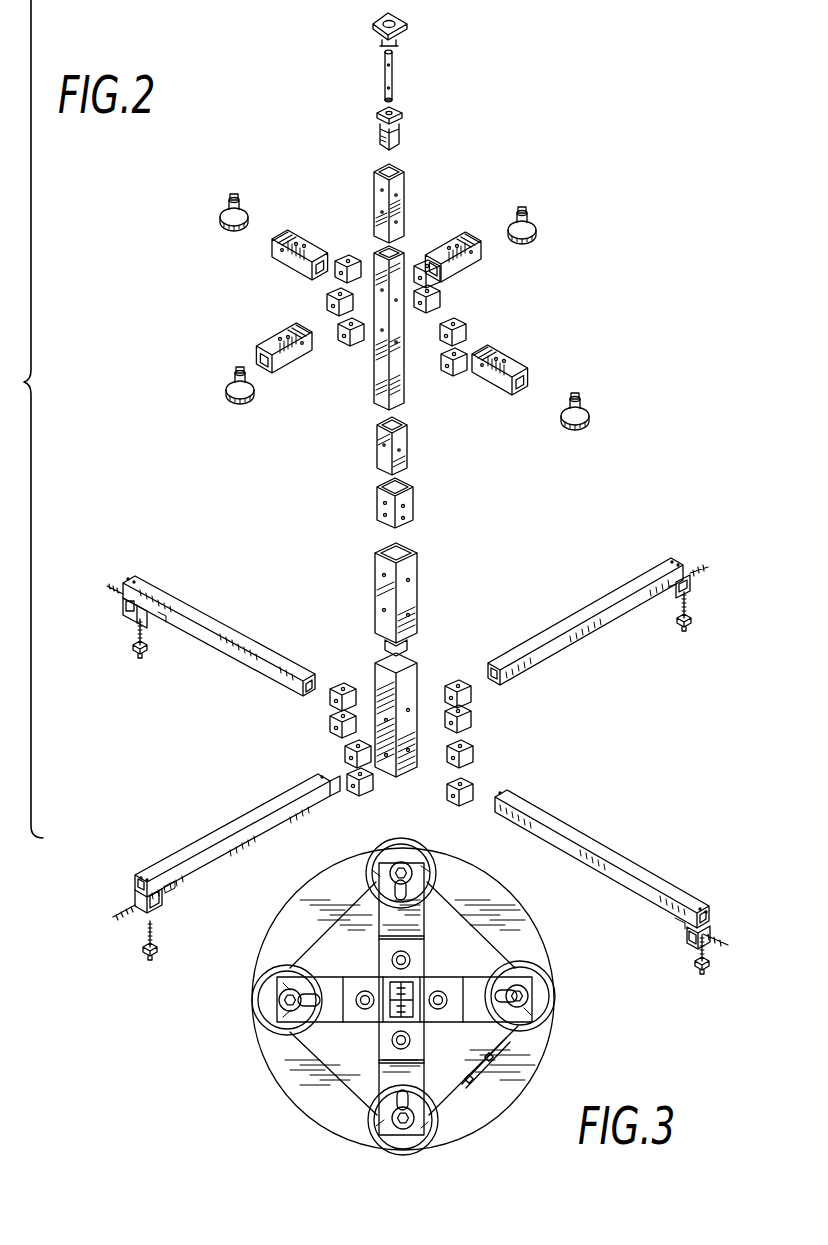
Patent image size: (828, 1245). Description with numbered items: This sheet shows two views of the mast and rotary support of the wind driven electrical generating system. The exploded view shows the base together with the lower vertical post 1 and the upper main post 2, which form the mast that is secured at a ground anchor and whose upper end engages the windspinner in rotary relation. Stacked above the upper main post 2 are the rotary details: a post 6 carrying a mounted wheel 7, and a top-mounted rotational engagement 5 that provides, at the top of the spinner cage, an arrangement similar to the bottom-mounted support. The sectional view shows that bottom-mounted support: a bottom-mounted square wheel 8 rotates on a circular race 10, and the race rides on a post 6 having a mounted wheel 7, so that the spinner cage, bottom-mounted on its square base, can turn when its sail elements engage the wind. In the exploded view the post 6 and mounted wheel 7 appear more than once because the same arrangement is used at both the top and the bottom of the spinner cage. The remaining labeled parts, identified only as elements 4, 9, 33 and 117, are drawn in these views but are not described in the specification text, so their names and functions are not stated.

In FIG. 2, the lower vertical post 1 is at (418, 592).
In FIG. 2, the upper main post 2 is at (404, 223).
In FIG. 3, the upper main post 2 is at (430, 1026).
In FIG. 2, the rod 4 is at (394, 72).
In FIG. 2, the top-mounted rotational engagement 5 is at (400, 36).
In FIG. 2, the post 6 is at (292, 268).
In FIG. 2, the mounted wheel 7 is at (220, 213).
In FIG. 3, the mounted wheel 7 is at (436, 873).
In FIG. 3, the bottom-mounted square wheel 8 is at (525, 956).
In FIG. 3, the tie rod 9 is at (500, 1080).
In FIG. 3, the circular race 10 is at (555, 982).
In FIG. 3, the cross bar 33 is at (376, 955).
In FIG. 3, the nut 117 is at (410, 962).